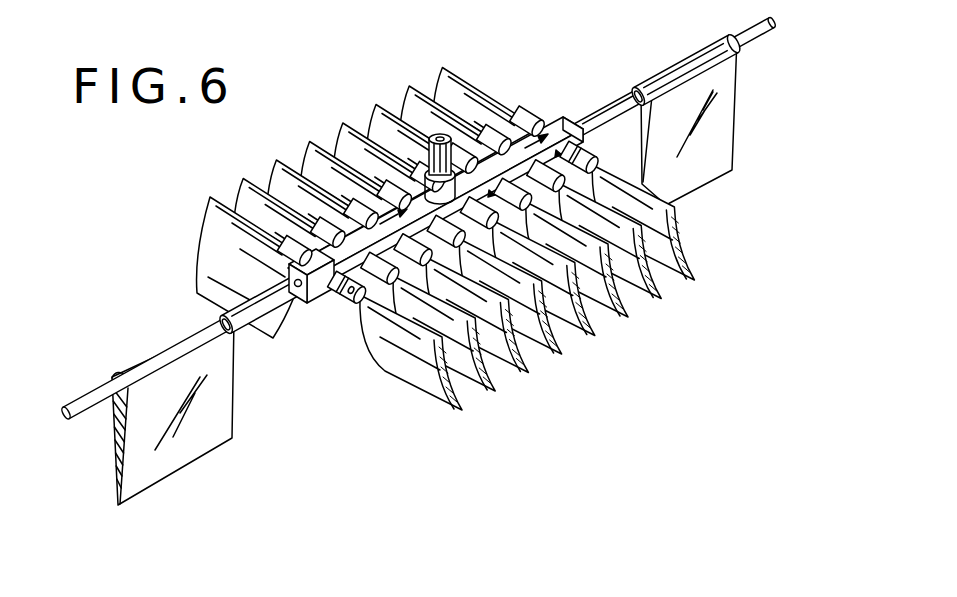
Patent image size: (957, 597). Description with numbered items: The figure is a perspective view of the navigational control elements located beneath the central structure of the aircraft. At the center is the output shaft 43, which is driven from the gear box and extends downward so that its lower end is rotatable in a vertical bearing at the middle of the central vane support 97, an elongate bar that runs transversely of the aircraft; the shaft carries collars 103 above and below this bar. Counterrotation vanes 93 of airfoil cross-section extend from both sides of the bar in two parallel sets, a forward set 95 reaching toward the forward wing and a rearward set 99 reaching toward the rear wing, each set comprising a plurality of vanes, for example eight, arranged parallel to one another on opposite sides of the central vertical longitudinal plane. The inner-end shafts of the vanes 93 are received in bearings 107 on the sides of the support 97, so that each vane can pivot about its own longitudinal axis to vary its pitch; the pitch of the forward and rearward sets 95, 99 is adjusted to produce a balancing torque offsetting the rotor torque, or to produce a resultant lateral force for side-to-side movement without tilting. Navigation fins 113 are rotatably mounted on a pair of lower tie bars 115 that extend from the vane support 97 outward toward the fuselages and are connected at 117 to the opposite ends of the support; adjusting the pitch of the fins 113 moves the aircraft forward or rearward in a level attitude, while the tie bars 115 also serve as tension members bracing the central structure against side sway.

The output shaft 43 is at (438, 135).
The counterrotation vanes 93 is at (207, 202).
The forward set of vanes 95 is at (242, 137).
The central vane support 97 is at (563, 116).
The rearward set of vanes 99 is at (706, 233).
The collars 103 is at (457, 187).
The bearings 107 is at (289, 246).
The navigation fins 113 is at (722, 78).
The lower tie bars 115 is at (614, 103).
The tie bar connection 117 is at (578, 118).